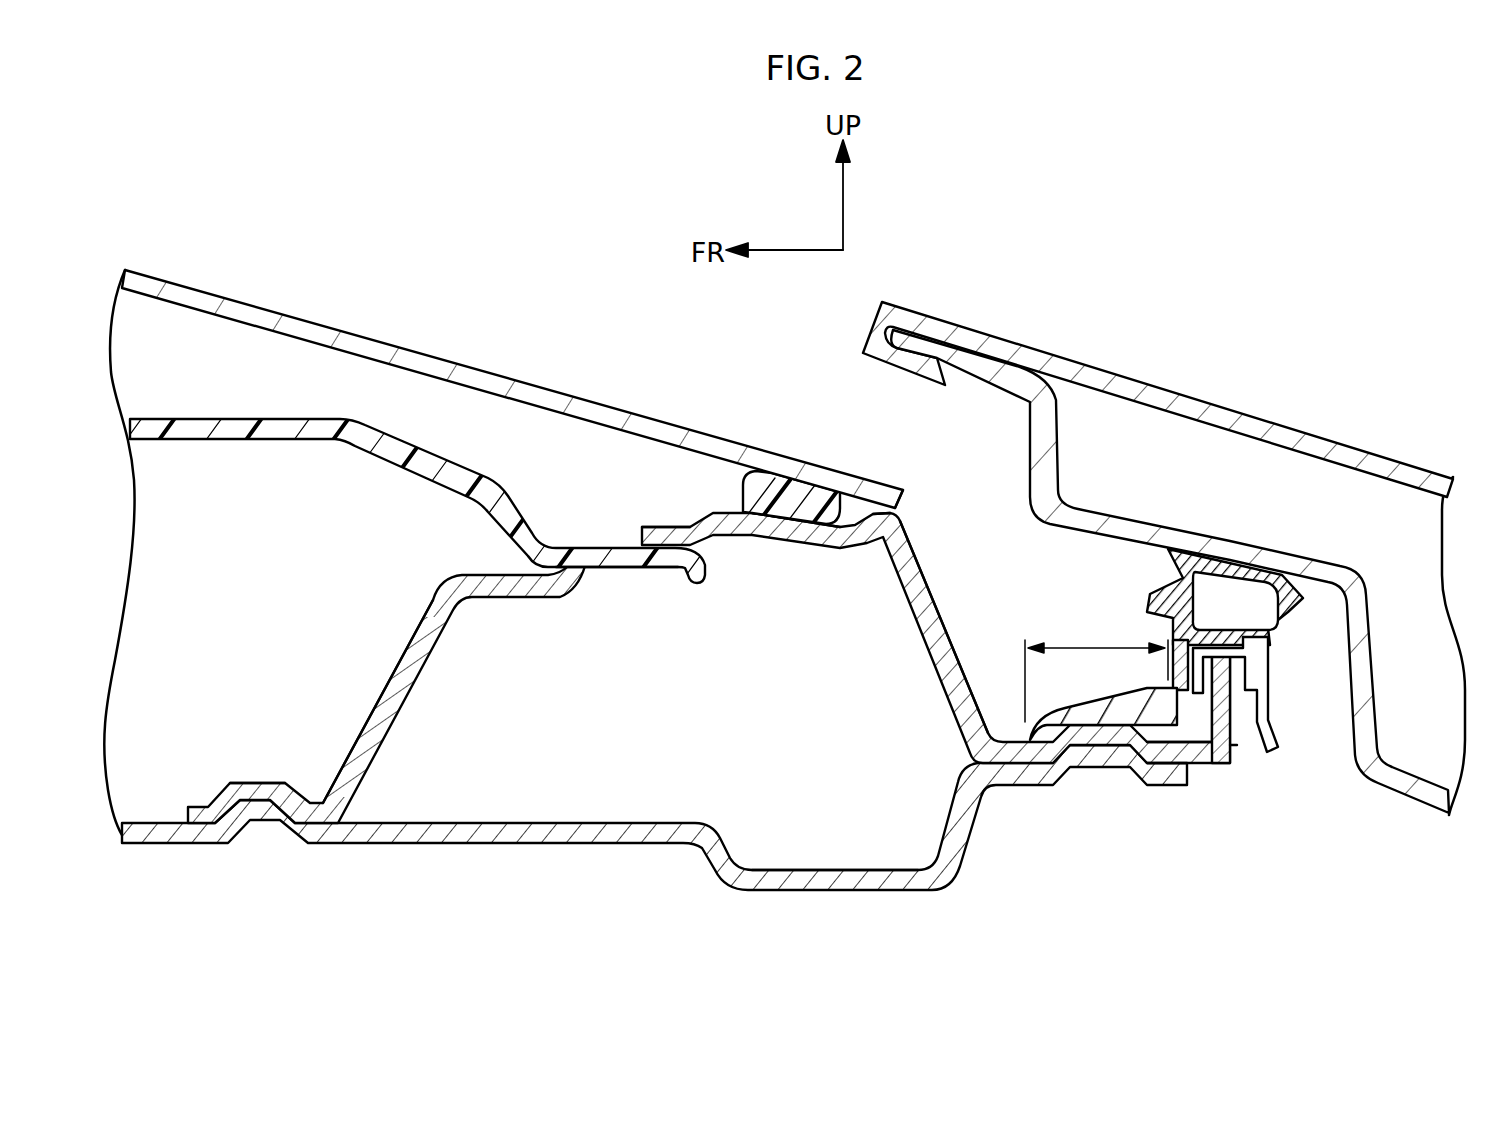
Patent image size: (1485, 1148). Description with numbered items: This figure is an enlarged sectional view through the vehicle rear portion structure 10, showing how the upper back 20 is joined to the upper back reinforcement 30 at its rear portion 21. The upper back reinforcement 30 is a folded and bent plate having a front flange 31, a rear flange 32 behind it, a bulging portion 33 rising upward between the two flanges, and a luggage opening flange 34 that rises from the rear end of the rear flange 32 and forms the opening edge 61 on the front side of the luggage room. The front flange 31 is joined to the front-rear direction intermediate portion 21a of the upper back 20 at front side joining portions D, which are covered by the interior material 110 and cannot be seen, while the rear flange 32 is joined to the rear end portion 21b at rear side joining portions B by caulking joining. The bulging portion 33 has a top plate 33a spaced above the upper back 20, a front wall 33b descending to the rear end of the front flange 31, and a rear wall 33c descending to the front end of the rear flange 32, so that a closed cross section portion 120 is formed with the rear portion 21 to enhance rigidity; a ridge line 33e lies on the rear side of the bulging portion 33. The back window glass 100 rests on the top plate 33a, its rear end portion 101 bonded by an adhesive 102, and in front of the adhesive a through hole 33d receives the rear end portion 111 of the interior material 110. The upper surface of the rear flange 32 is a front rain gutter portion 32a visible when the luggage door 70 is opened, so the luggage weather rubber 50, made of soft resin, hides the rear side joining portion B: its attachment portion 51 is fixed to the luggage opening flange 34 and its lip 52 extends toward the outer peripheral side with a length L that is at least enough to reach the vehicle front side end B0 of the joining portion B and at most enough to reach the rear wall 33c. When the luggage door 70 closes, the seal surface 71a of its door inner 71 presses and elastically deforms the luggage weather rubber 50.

The vehicle rear portion structure 10 is at (552, 280).
The upper back 20 is at (411, 855).
The rear portion 21 is at (783, 880).
The front-rear direction intermediate portion 21a is at (272, 810).
The rear end portion 21b is at (1150, 780).
The upper back reinforcement 30 is at (378, 655).
The front flange 31 is at (238, 790).
The rear flange 32 is at (1205, 760).
The front rain gutter portion 32a is at (1180, 790).
The bulging portion 33 is at (752, 530).
The top plate 33a is at (800, 542).
The front wall 33b is at (395, 714).
The rear wall 33c is at (912, 605).
The through hole 33d is at (640, 537).
The ridge line 33e is at (893, 517).
The luggage opening flange 34 is at (1225, 706).
The luggage weather rubber 50 is at (1184, 704).
The attachment portion 51 is at (1263, 677).
The lip 52 is at (1104, 718).
The opening edge 61 is at (1233, 745).
The luggage door 70 is at (1206, 385).
The door inner 71 is at (1392, 797).
The seal surface 71a is at (1113, 537).
The back window glass 100 is at (558, 400).
The rear end portion 101 is at (866, 484).
The adhesive 102 is at (787, 500).
The interior material 110 is at (387, 442).
The rear end portion 111 is at (638, 562).
The closed cross section portion 120 is at (938, 566).
The length of the lip L is at (1096, 669).
The front side joining portions D is at (262, 765).
The rear side joining portion B is at (1071, 808).
The vehicle front side end B0 is at (1045, 790).